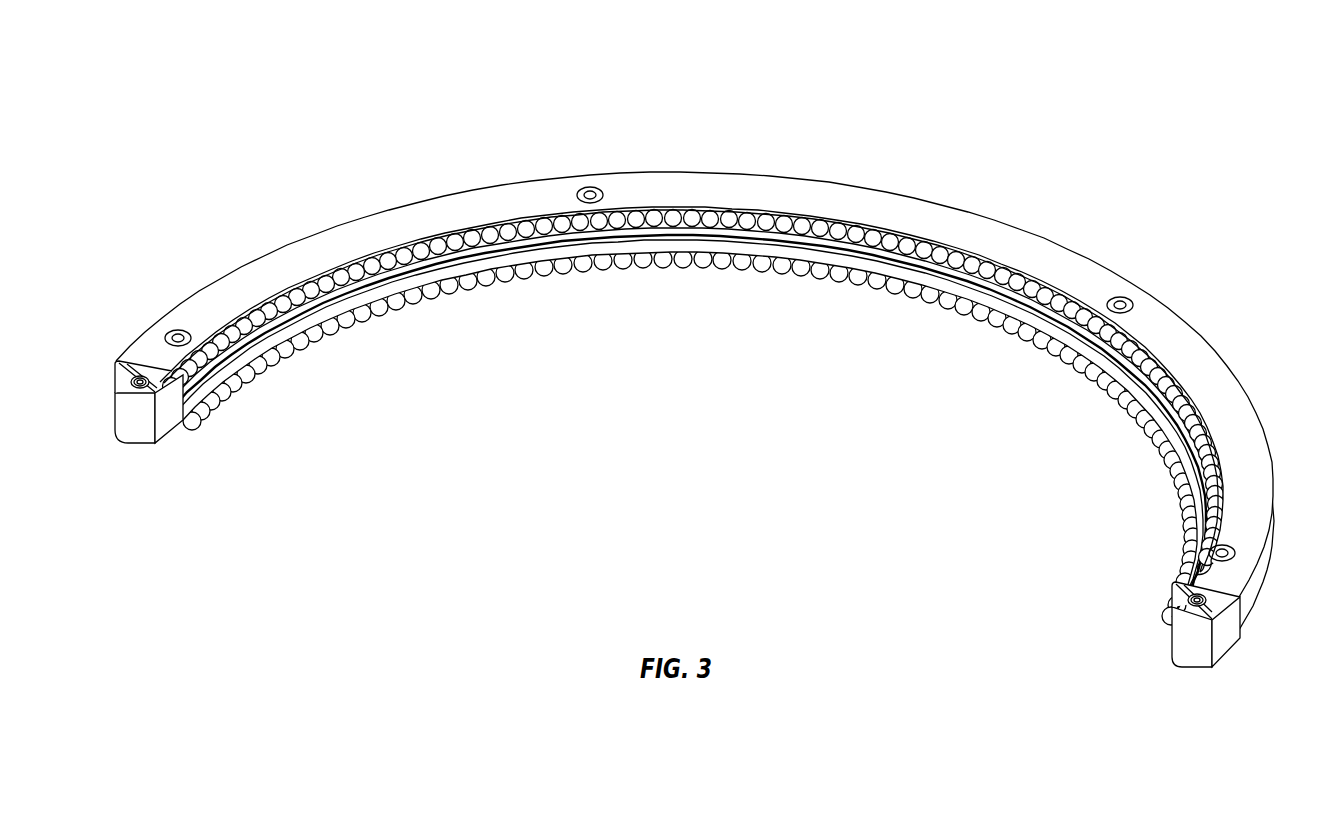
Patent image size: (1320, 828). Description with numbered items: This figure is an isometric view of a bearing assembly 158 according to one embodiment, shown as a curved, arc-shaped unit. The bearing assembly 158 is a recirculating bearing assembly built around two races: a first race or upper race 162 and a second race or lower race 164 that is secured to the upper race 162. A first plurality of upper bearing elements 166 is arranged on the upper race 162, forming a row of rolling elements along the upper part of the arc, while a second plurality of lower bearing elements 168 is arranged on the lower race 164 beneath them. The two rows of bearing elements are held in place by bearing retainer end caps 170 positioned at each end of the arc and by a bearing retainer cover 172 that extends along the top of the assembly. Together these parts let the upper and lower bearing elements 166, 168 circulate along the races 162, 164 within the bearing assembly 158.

The bearing assembly 158 is at (694, 376).
The upper race 162 is at (675, 229).
The lower race 164 is at (450, 270).
The upper bearing elements 166 is at (830, 222).
The lower bearing elements 168 is at (718, 263).
The bearing retainer end caps 170 is at (143, 430).
The bearing retainer cover 172 is at (262, 266).